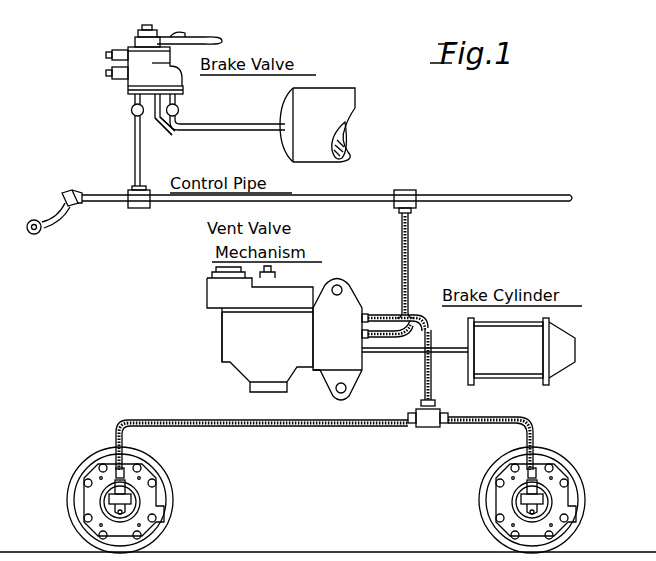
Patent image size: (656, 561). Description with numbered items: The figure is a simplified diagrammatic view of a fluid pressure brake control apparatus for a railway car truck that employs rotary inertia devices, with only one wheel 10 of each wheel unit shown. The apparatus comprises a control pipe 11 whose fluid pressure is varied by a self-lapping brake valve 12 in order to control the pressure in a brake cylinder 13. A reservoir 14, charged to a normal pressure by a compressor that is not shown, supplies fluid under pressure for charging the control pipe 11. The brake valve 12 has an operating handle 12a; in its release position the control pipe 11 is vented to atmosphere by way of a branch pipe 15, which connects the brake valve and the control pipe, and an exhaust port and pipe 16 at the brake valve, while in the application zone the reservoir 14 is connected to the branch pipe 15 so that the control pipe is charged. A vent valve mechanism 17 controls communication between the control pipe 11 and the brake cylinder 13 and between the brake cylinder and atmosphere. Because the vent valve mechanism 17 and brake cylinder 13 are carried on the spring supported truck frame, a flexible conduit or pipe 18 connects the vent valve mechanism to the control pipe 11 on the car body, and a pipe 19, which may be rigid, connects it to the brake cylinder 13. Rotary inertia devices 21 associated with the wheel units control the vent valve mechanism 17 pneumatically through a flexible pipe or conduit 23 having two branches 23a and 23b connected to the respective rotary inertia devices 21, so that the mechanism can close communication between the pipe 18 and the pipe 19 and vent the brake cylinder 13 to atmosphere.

The wheel 10 is at (148, 536).
The control pipe 11 is at (455, 196).
The brake valve 12 is at (124, 48).
The operating handle 12a is at (222, 40).
The brake cylinder 13 is at (584, 346).
The reservoir 14 is at (364, 103).
The branch pipe 15 is at (135, 158).
The exhaust port and pipe 16 is at (170, 138).
The vent valve mechanism 17 is at (214, 334).
The flexible conduit or pipe 18 is at (409, 242).
The pipe 19 is at (452, 347).
The rotary inertia device 21 is at (138, 499).
The flexible pipe or conduit 23 is at (424, 386).
The branch 23a is at (160, 420).
The branch 23b is at (533, 418).